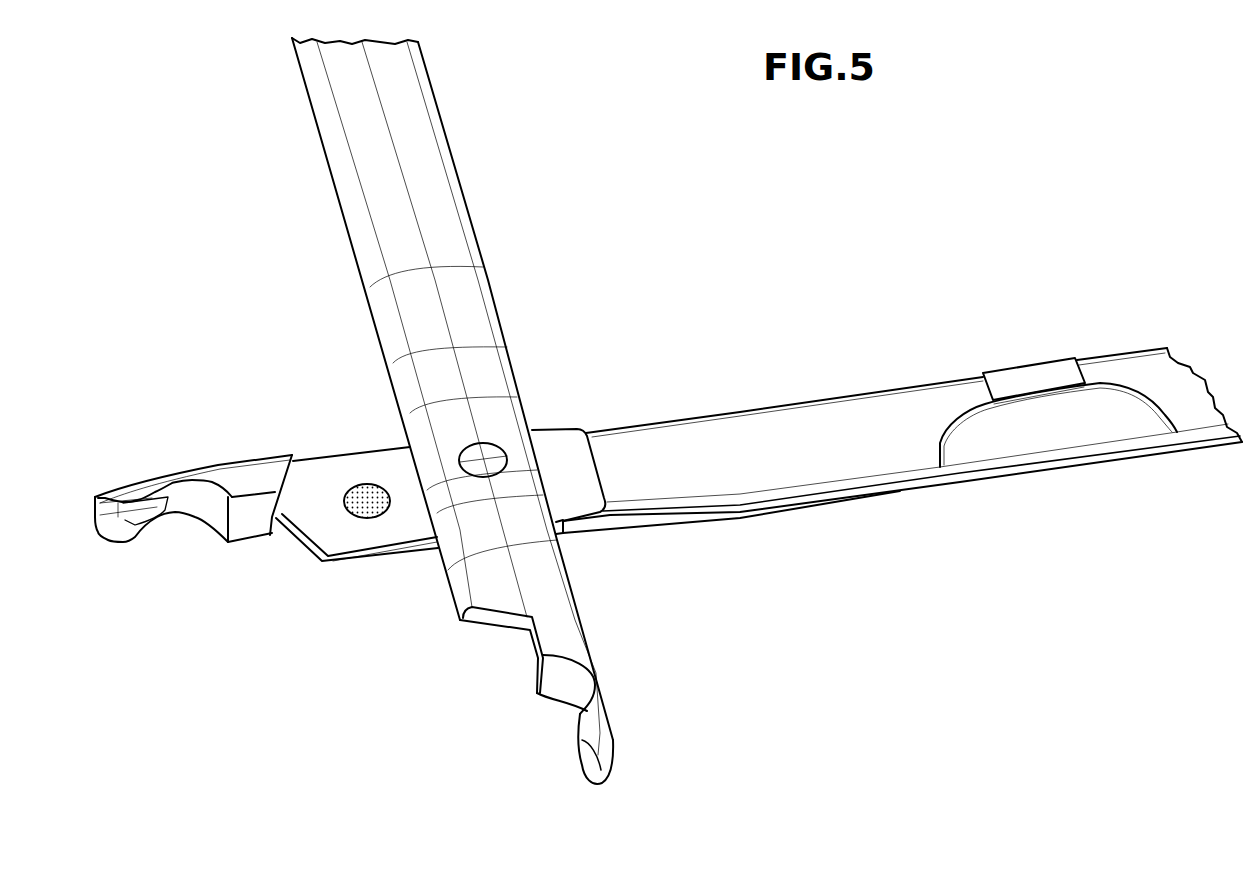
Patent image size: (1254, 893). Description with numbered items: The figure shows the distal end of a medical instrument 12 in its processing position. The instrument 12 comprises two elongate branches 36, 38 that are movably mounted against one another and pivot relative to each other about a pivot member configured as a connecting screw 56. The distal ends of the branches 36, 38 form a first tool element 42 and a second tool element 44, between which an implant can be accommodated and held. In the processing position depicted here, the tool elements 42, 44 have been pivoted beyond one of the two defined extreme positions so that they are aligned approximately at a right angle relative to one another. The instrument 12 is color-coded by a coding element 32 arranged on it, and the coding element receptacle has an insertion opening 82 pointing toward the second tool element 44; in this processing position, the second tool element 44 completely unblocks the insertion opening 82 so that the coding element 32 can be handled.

The instrument 12 is at (727, 278).
The coding element 32 is at (363, 517).
The branch 36 is at (897, 408).
The branch 38 is at (437, 205).
The first tool element 42 is at (160, 480).
The second tool element 44 is at (583, 657).
The connecting screw 56 is at (486, 453).
The insertion opening 82 is at (372, 483).